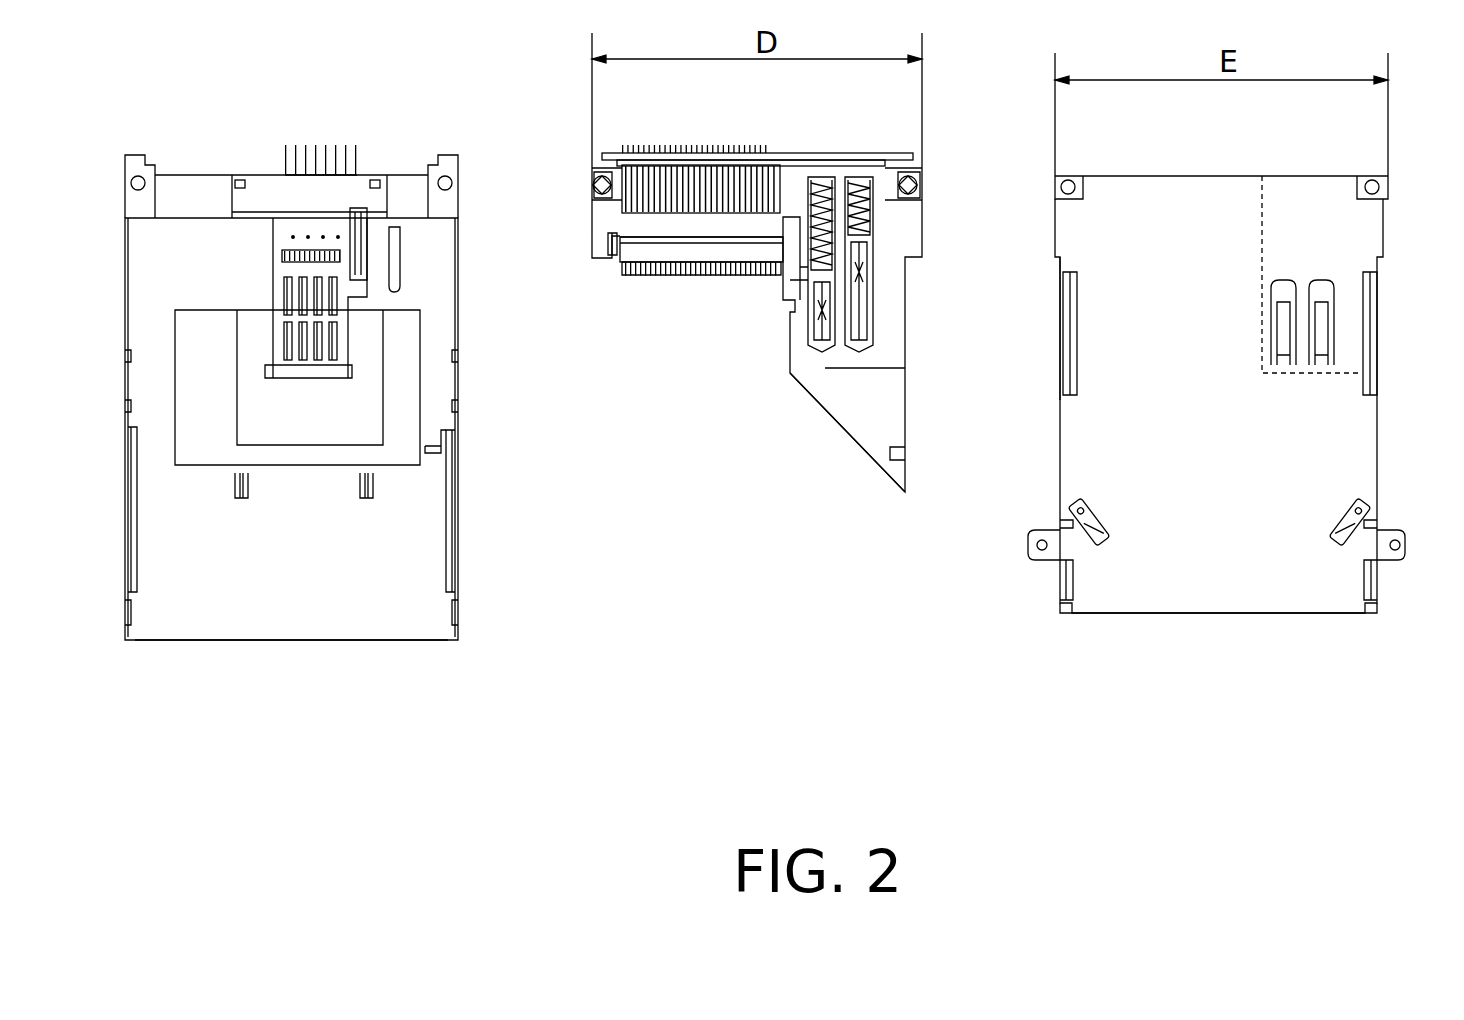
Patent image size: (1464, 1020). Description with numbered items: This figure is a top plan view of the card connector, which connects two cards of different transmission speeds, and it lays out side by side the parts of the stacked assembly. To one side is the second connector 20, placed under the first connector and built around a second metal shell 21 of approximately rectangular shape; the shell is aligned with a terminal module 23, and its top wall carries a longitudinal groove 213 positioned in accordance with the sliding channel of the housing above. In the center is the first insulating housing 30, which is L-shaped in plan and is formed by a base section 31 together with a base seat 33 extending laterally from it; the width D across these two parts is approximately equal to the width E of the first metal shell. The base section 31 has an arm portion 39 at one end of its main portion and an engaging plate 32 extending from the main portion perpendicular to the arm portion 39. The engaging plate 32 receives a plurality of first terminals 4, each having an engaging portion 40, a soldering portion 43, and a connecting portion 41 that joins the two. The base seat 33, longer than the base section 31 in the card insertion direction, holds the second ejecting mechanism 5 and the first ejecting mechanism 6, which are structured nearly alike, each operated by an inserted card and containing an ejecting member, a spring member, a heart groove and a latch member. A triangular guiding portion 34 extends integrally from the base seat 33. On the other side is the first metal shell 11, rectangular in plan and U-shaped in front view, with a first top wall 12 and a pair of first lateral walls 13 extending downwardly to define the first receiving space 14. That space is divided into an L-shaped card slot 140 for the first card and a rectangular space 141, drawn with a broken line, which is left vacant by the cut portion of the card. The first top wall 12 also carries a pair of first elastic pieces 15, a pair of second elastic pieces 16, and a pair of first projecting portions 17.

The second connector 20 is at (150, 256).
The second metal shell 21 is at (255, 577).
The terminal module 23 is at (285, 225).
The longitudinal groove 213 is at (396, 252).
The first terminal 4 is at (648, 183).
The soldering portion 43 is at (665, 158).
The connecting portion 41 is at (720, 193).
The first insulating housing 30 is at (790, 183).
The base section 31 is at (642, 223).
The base seat 33 is at (892, 218).
The arm portion 39 is at (600, 242).
The engaging plate 32 is at (637, 250).
The engaging portion 40 is at (698, 272).
The second ejecting mechanism 5 is at (867, 270).
The first ejecting mechanism 6 is at (820, 277).
The guiding portion 34 is at (873, 447).
The first metal shell 11 is at (1327, 192).
The card slot 140 is at (1107, 205).
The rectangular space 141 is at (1290, 215).
The second elastic pieces 16 is at (1325, 323).
The first projecting portions 17 is at (1070, 358).
The first lateral walls 13 is at (1378, 420).
The first receiving space 14 is at (1130, 582).
The first top wall 12 is at (1310, 437).
The first elastic pieces 15 is at (1343, 533).